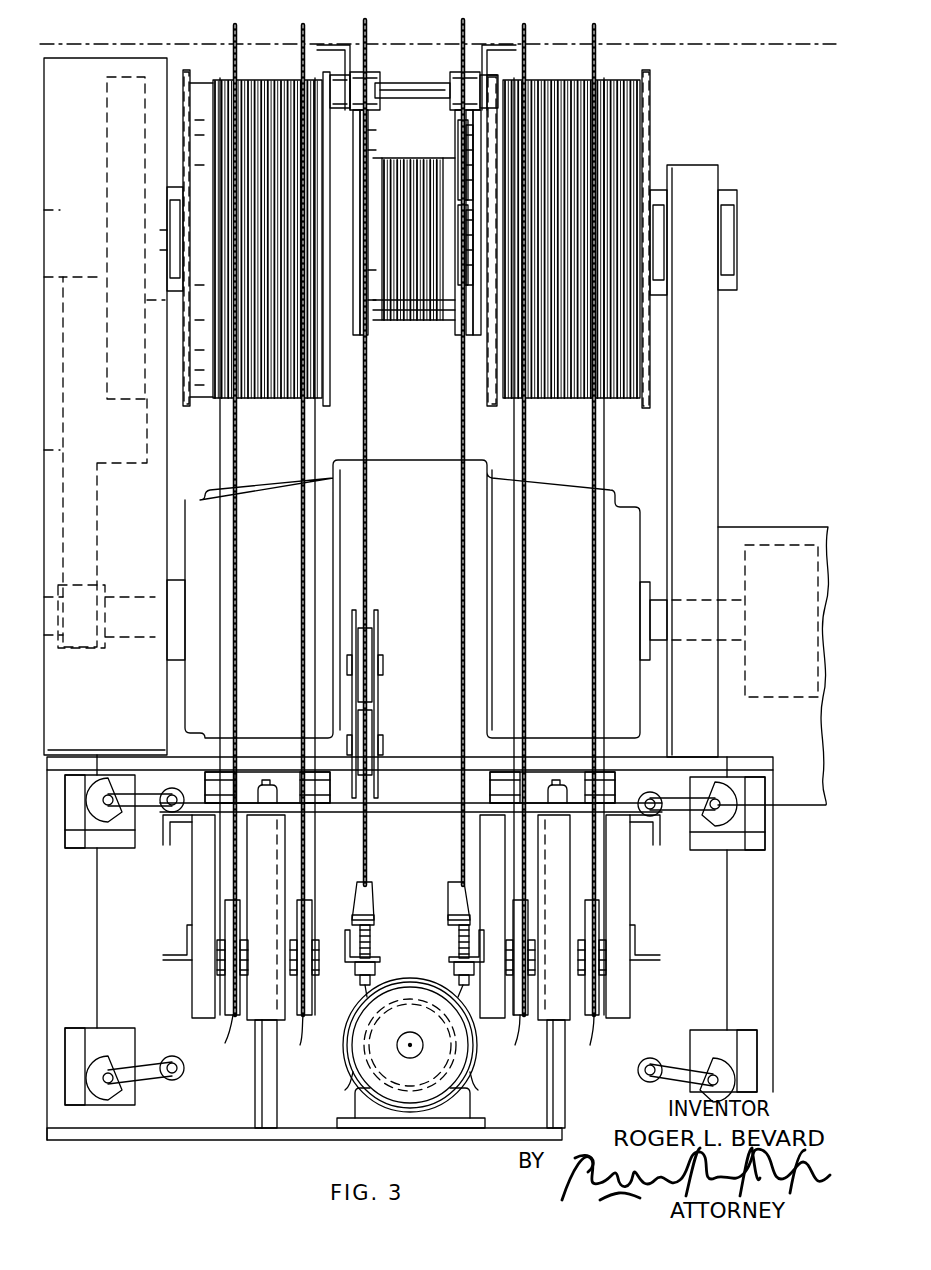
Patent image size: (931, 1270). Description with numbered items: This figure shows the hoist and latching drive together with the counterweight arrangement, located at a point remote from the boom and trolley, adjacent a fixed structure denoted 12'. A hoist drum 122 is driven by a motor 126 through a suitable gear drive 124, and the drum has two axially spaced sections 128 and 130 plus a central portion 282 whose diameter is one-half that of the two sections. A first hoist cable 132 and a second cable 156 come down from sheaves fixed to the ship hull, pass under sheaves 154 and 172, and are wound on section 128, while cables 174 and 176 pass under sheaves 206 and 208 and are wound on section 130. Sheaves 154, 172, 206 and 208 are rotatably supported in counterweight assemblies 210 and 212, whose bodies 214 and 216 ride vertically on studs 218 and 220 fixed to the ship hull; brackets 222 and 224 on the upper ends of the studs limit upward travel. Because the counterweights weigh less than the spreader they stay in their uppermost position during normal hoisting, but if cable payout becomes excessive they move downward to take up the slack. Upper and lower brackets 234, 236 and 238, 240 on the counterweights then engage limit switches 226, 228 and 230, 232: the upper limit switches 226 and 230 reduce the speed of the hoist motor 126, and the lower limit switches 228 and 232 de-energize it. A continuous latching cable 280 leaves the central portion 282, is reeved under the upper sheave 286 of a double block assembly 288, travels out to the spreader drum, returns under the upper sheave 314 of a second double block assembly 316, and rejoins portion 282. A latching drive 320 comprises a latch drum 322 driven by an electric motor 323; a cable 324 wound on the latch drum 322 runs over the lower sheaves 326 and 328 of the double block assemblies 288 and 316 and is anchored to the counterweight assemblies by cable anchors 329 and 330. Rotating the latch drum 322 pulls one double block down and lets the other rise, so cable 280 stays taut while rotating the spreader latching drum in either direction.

The ceiling 12' is at (438, 64).
The hoist drum 122 is at (684, 86).
The gear drive 124 is at (140, 510).
The motor 126 is at (402, 482).
The hoist drum section 128 is at (205, 402).
The hoist drum section 130 is at (636, 402).
The first hoist cable 132 is at (236, 55).
The sheave 154 is at (232, 1015).
The second cable 156 is at (302, 55).
The sheave 172 is at (308, 1021).
The cable 174 is at (598, 57).
The cable 176 is at (527, 55).
The sheave 206 is at (600, 1021).
The sheave 208 is at (518, 1021).
The counterweight assembly 210 is at (176, 908).
The counterweight assembly 212 is at (651, 911).
The body 214 is at (192, 997).
The body 216 is at (627, 1006).
The stud 218 is at (258, 1105).
The stud 220 is at (550, 1084).
The bracket 222 is at (250, 779).
The bracket 224 is at (558, 777).
The upper limit switch 226 is at (122, 778).
The lower limit switch 228 is at (128, 1100).
The upper limit switch 230 is at (747, 783).
The lower limit switch 232 is at (725, 1046).
The upper bracket 234 is at (180, 828).
The lower bracket 236 is at (172, 956).
The upper bracket 238 is at (652, 828).
The lower bracket 240 is at (660, 956).
The continuous cable 280 is at (462, 39).
The central portion 282 is at (461, 318).
The upper sheave 286 is at (370, 642).
The double block assembly 288 is at (384, 690).
The upper sheave 314 is at (464, 133).
The double block assembly 316 is at (443, 146).
The latching drive 320 is at (430, 892).
The latch drum 322 is at (368, 1068).
The electric motor 323 is at (455, 1108).
The cable 324 is at (459, 836).
The lower sheave 326 is at (370, 726).
The lower sheave 328 is at (430, 286).
The cable anchor 329 is at (374, 917).
The cable anchor 330 is at (452, 917).